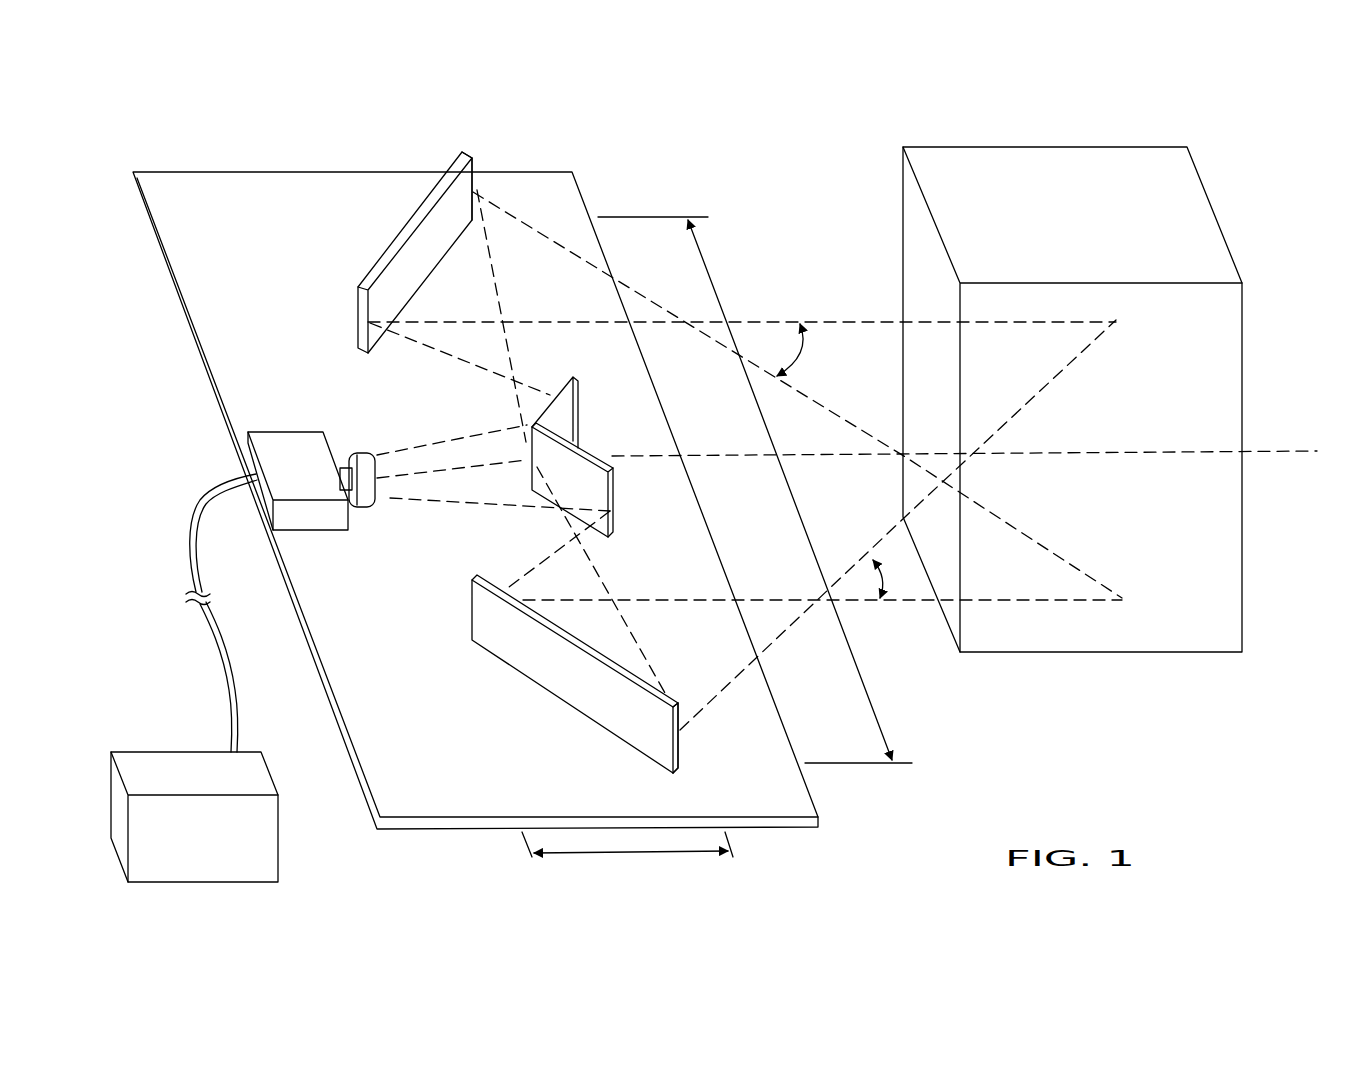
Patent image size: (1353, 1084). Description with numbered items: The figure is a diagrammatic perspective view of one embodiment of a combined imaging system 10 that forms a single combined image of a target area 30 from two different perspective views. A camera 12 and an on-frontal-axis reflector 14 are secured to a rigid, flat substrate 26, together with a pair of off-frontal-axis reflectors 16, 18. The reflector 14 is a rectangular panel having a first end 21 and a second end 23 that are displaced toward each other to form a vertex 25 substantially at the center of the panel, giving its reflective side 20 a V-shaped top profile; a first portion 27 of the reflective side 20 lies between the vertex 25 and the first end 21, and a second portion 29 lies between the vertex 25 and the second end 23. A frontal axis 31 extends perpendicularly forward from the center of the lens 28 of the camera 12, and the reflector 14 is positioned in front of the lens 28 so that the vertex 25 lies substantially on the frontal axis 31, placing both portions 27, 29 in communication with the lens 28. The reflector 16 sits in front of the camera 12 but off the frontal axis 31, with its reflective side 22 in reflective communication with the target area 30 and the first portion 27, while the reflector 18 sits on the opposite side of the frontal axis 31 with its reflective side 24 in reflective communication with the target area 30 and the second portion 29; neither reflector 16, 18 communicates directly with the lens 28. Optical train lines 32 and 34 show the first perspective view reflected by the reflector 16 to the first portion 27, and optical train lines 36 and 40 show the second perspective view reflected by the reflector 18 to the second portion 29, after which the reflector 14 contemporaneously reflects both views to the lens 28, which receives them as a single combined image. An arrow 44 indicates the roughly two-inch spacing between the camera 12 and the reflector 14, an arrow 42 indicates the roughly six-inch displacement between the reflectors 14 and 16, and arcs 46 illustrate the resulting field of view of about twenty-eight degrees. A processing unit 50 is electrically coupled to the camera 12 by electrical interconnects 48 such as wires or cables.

The combined imaging system 10 is at (615, 146).
The camera 12 is at (312, 473).
The on-frontal-axis reflector 14 is at (558, 433).
The off-frontal-axis reflector 16 is at (412, 230).
The off-frontal-axis reflector 18 is at (492, 645).
The reflective side 20 is at (532, 366).
The first end 21 is at (580, 393).
The reflective side 22 is at (458, 190).
The second end 23 is at (617, 487).
The reflective side 24 is at (670, 692).
The vertex 25 is at (525, 470).
The substrate 26 is at (185, 184).
The first portion 27 is at (551, 383).
The lens 28 is at (386, 486).
The second portion 29 is at (600, 540).
The target area 30 is at (1010, 146).
The frontal axis 31 is at (1262, 456).
The optical train line 32 is at (857, 317).
The optical train line 34 is at (495, 273).
The optical train line 36 is at (897, 530).
The optical train line 40 is at (918, 602).
The arrow 42 is at (871, 700).
The arrow 44 is at (615, 853).
The arcs 46 is at (805, 350).
The electrical interconnects 48 is at (192, 530).
The processing unit 50 is at (174, 849).